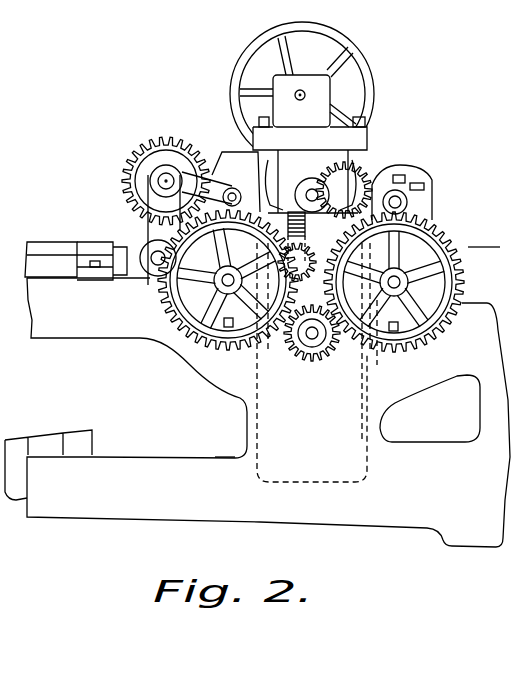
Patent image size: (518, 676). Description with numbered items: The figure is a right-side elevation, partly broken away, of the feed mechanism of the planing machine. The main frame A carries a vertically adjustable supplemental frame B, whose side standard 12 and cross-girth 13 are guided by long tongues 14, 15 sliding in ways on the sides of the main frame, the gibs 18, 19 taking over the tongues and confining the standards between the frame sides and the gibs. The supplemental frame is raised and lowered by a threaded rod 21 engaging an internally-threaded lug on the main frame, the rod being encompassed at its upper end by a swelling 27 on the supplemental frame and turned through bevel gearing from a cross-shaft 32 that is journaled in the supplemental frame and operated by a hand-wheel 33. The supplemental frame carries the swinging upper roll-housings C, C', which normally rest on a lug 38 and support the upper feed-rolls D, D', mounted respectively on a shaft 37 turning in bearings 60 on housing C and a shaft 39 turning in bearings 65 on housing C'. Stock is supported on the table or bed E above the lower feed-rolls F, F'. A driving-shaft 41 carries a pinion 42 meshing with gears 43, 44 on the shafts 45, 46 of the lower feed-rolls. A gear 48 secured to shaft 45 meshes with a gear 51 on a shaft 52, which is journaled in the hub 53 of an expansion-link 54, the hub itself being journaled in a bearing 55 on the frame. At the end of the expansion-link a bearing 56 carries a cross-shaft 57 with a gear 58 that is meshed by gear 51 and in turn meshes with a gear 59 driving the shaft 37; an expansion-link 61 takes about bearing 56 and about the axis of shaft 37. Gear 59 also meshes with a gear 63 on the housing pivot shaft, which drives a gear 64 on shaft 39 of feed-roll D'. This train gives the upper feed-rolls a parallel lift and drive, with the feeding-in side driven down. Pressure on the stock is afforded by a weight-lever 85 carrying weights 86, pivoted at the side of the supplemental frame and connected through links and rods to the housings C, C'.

The main frame A is at (268, 412).
The supplemental frame B is at (440, 233).
The upper roll-housing C is at (236, 181).
The upper roll-housing C' is at (443, 167).
The upper feed-roll D is at (232, 153).
The upper feed-roll D' is at (398, 158).
The stock-supporting table E is at (31, 240).
The lower feed-roll F is at (197, 248).
The lower feed-roll F' is at (464, 288).
The side standard 12 is at (306, 261).
The cross-girth 13 is at (360, 162).
The long tongue 14 is at (262, 236).
The long tongue 15 is at (378, 240).
The gib 18 is at (262, 424).
The gib 19 is at (366, 430).
The threaded rod 21 is at (307, 222).
The swelling 27 is at (370, 129).
The cross-shaft 32 is at (303, 95).
The hand-wheel 33 is at (234, 66).
The shaft 37 is at (165, 230).
The lug 38 is at (312, 195).
The shaft 39 is at (407, 182).
The driving-shaft 41 is at (315, 337).
The pinion 42 is at (308, 352).
The gear 43 is at (229, 352).
The gear 44 is at (445, 326).
The shaft 45 is at (200, 298).
The shaft 46 is at (402, 270).
The gear 48 is at (166, 280).
The gear 51 is at (146, 223).
The shaft 52 is at (150, 266).
The hub 53 is at (113, 272).
The expansion-link 54 is at (138, 246).
The bearing 55 is at (108, 258).
The bearing 56 is at (165, 181).
The cross-shaft 57 is at (150, 172).
The gear 58 is at (158, 140).
The gear 59 is at (253, 192).
The bearing 60 is at (222, 168).
The expansion-link 61 is at (181, 158).
The gear 63 is at (368, 157).
The gear 64 is at (380, 180).
The bearing 65 is at (428, 197).
The weight-lever 85 is at (223, 456).
The weight 86 is at (86, 443).